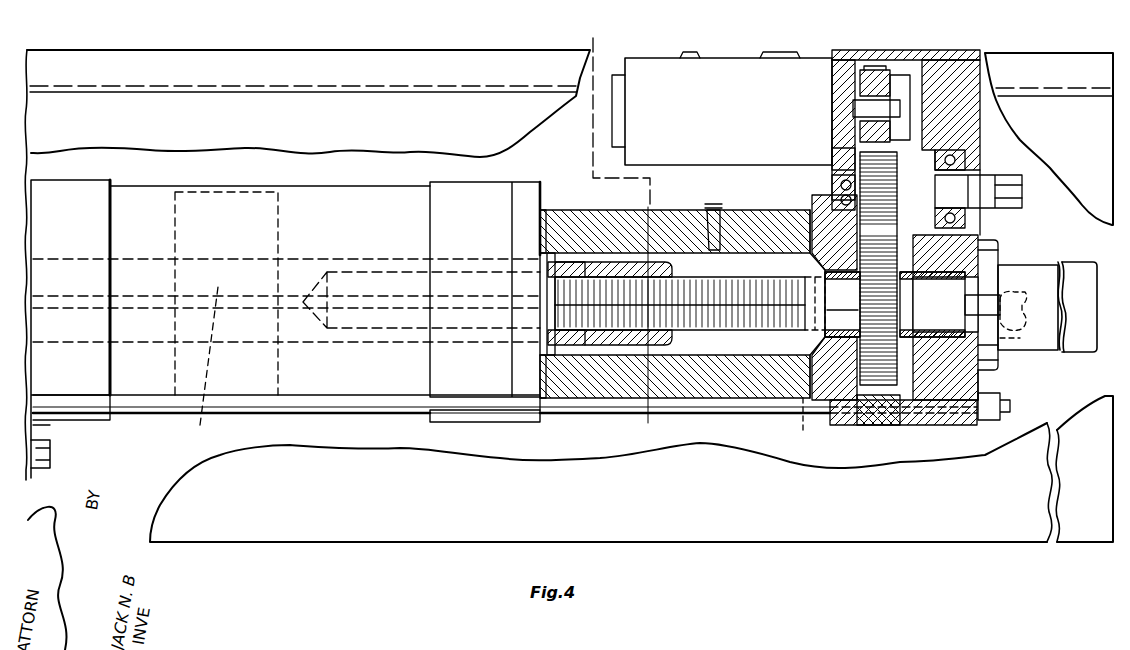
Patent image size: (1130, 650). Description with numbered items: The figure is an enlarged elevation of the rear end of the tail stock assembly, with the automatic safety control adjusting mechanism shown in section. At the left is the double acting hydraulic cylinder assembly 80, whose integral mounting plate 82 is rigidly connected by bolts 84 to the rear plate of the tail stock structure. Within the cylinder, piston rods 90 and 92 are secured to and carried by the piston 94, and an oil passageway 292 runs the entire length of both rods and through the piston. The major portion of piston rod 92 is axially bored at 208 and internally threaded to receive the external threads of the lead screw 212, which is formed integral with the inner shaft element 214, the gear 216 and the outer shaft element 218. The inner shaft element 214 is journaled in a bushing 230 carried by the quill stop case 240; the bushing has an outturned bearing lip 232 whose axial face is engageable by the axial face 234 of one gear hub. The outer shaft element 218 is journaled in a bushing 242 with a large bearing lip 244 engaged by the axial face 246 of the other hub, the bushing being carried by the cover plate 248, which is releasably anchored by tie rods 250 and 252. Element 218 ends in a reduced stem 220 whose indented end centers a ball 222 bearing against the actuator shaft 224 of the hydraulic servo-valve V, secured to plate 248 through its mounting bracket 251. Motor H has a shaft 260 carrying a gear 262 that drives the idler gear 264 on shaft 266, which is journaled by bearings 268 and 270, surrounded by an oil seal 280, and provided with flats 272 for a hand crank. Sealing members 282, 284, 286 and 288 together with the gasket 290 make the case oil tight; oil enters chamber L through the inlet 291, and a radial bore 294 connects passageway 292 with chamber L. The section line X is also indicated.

The hydraulic cylinder assembly 80 is at (142, 195).
The piston rod 90 is at (62, 262).
The piston 94 is at (224, 207).
The piston rod 92 is at (340, 262).
The oil passageway 292 is at (203, 367).
The mounting plate 82 is at (46, 428).
The bolts 84 is at (50, 456).
The axial bore 208 is at (383, 285).
The tie rod 250 is at (598, 400).
The quill stop case 240 is at (722, 397).
The sealing member 288 is at (545, 242).
The oil inlet 291 is at (712, 210).
The chamber L is at (697, 342).
The lead screw 212 is at (712, 278).
The bushing 230 is at (808, 278).
The inner shaft element 214 is at (856, 304).
The axial face 234 is at (854, 321).
The bearing lip 232 is at (860, 426).
The radial bore 294 is at (805, 424).
The sealing member 286 is at (838, 68).
The gasket 290 is at (921, 52).
The bearing lip 244 is at (905, 425).
The cover plate 248 is at (960, 426).
The motor H is at (738, 70).
The shaft 260 is at (853, 108).
The gear 262 is at (876, 68).
The bearing 268 is at (835, 160).
The idler gear 264 is at (838, 190).
The gear 216 is at (883, 426).
The outer shaft element 218 is at (941, 304).
The axial face 246 is at (905, 321).
The shaft 266 is at (950, 188).
The flats 272 is at (1015, 203).
The bearing 270 is at (965, 135).
The oil seal 280 is at (970, 158).
The mounting bracket 251 is at (988, 243).
The sealing member 282 is at (978, 272).
The stem 220 is at (975, 305).
The hydraulic servo-valve V is at (1086, 309).
The actuator shaft 224 is at (1028, 310).
The ball 222 is at (1024, 339).
The sealing member 284 is at (996, 352).
The bushing 242 is at (980, 378).
The tie rod 252 is at (1010, 405).
The section line X- X is at (619, 230).